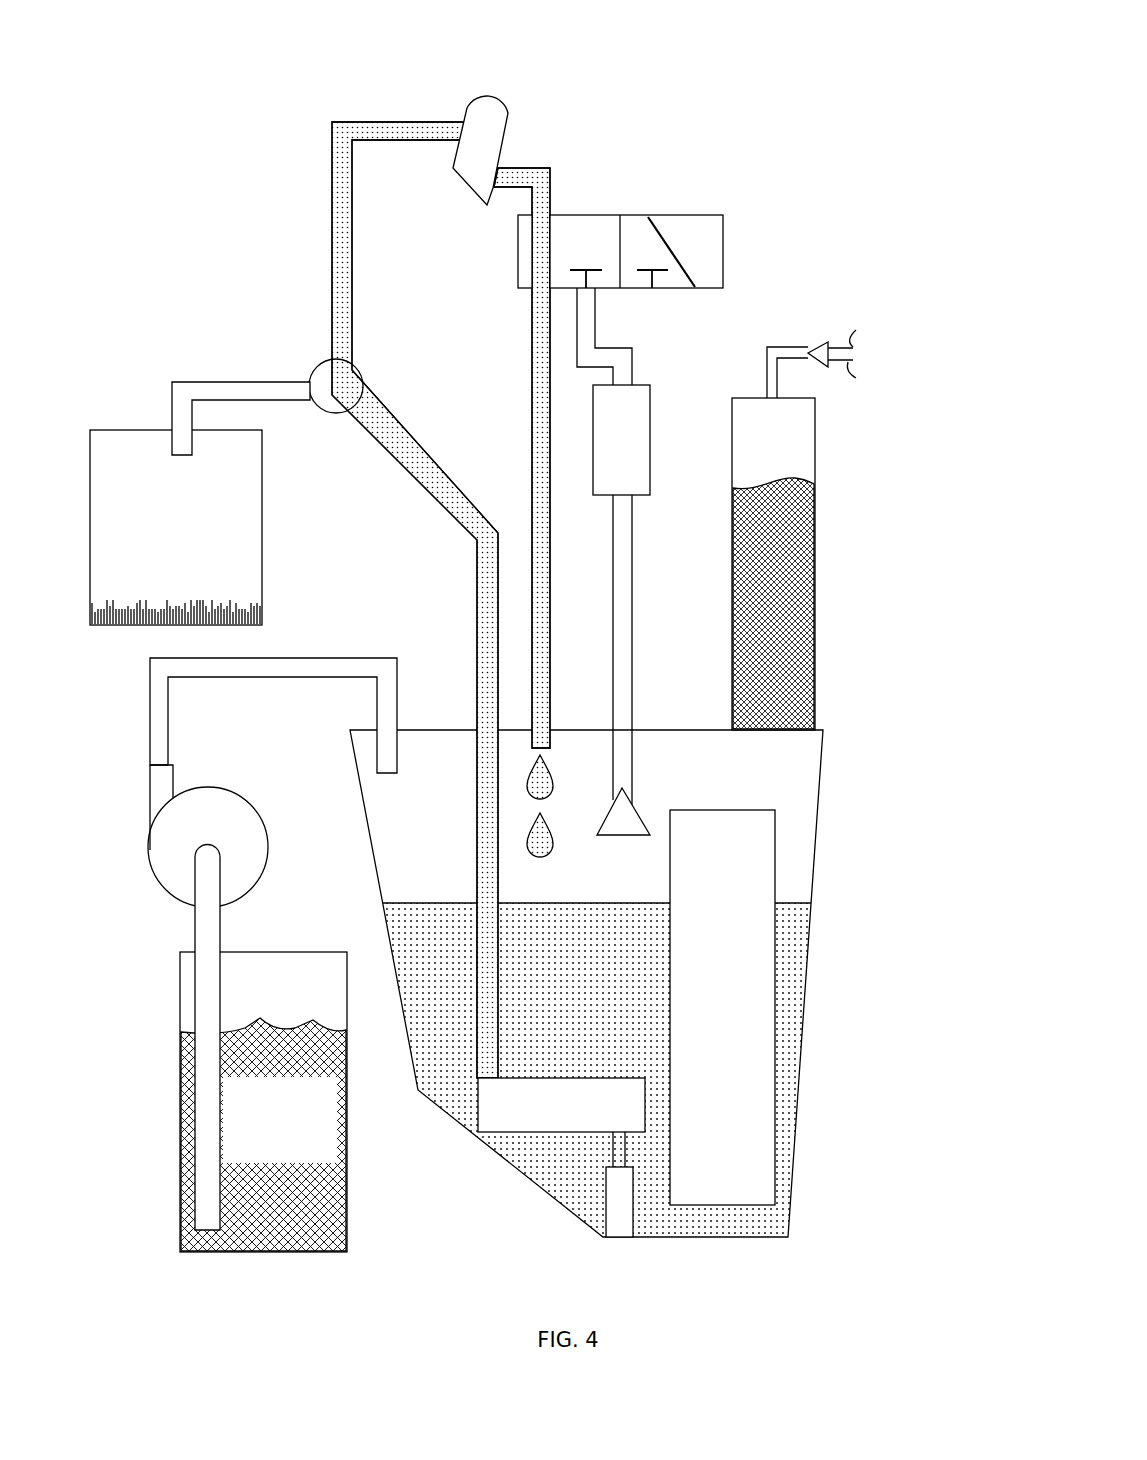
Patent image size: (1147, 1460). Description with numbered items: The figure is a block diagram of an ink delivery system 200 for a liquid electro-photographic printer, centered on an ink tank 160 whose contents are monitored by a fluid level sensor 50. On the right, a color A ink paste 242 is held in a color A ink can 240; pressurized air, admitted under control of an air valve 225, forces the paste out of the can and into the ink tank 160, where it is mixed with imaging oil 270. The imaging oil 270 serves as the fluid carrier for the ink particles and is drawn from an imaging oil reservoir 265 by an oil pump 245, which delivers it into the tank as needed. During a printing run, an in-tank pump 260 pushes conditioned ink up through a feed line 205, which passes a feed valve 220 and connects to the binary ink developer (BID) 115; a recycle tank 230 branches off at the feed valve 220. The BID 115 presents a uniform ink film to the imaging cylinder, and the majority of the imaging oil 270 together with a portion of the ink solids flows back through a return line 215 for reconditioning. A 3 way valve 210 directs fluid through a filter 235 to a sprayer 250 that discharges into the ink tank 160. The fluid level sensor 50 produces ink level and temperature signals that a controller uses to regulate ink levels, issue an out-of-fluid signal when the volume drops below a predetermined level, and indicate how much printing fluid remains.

The ink delivery system 200 is at (779, 74).
The feed line 205 is at (347, 120).
The binary ink developer (BID) 115 is at (507, 111).
The 3 way valve 210 is at (688, 240).
The feed valve 220 is at (330, 358).
The return line 215 is at (532, 333).
The air valve 225 is at (824, 343).
The color A ink can 240 is at (846, 538).
The color A ink paste 242 is at (784, 659).
The recycle tank 230 is at (200, 503).
The filter 235 is at (638, 475).
The oil pump 245 is at (235, 790).
The sprayer 250 is at (622, 820).
The ink tank 160 is at (813, 892).
The fluid level sensor 50 is at (776, 1034).
The imaging oil 270 is at (263, 1134).
The in-tank pump 260 is at (517, 1118).
The imaging oil reservoir 265 is at (243, 1164).